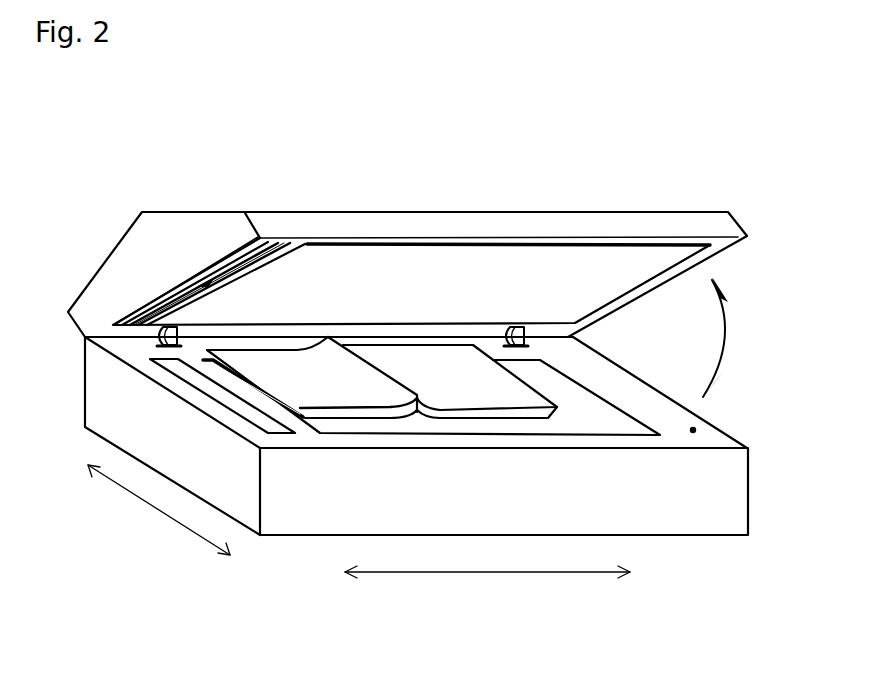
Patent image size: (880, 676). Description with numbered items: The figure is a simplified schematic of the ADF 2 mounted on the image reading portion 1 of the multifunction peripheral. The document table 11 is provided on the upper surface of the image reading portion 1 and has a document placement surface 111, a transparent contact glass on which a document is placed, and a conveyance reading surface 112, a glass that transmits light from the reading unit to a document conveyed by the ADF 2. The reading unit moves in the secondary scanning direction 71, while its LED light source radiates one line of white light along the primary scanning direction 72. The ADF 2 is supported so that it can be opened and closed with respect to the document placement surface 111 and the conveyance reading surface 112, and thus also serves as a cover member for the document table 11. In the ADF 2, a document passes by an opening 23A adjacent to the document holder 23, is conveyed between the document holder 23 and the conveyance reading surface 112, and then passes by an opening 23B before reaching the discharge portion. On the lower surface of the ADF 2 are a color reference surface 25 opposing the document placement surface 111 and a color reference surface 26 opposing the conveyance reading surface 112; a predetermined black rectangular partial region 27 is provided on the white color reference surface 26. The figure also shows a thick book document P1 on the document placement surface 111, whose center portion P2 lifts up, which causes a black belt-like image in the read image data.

The image reading portion 1 is at (748, 482).
The ADF 2 is at (693, 212).
The document table 11 is at (696, 430).
The document holder 23 is at (278, 242).
The opening 23A is at (240, 252).
The opening 23B is at (289, 256).
The color reference surface 25 is at (657, 282).
The color reference surface 26 is at (262, 258).
The partial region 27 is at (192, 283).
The secondary scanning direction 71 is at (545, 572).
The primary scanning direction 72 is at (150, 508).
The document placement surface 111 is at (620, 408).
The conveyance reading surface 112 is at (212, 402).
The book document P1 is at (455, 418).
The center portion P2 is at (415, 418).